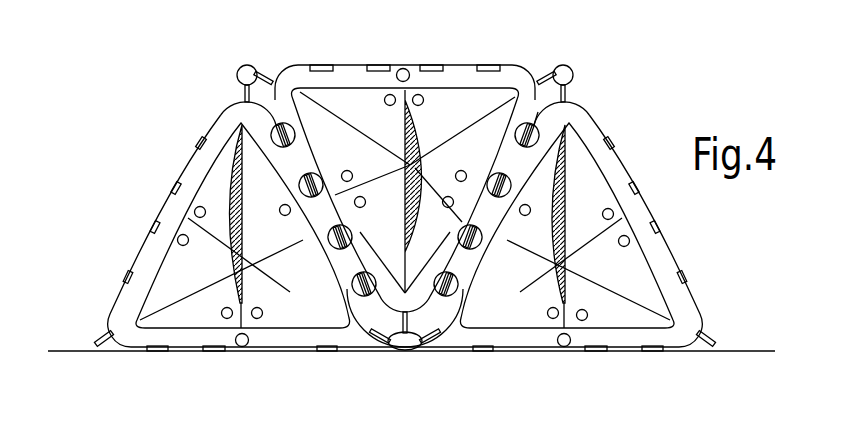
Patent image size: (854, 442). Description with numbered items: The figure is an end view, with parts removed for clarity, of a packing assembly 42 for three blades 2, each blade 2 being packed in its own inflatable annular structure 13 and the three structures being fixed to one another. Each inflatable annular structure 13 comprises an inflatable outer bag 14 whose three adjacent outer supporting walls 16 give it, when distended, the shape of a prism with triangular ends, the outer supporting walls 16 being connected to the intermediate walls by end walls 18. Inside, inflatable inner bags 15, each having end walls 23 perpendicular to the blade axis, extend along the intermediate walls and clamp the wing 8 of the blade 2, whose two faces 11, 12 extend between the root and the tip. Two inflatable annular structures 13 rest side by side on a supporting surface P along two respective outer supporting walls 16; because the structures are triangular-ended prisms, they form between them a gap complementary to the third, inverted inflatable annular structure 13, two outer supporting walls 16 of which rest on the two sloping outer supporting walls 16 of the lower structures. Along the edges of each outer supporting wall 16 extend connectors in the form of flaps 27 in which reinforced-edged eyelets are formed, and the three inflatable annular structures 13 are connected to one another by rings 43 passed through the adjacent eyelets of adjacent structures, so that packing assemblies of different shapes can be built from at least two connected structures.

The blade 2 is at (432, 125).
The wing 8 is at (225, 285).
The face 11 is at (215, 200).
The face 12 is at (244, 240).
The inflatable annular structure 13 is at (328, 66).
The inflatable outer bag 14 is at (383, 60).
The inflatable inner bag 15 is at (258, 125).
The outer supporting wall 16 is at (405, 67).
The end wall 18 is at (112, 312).
The end wall 23 is at (320, 64).
The flap 27 is at (266, 75).
The packing assembly 42 is at (635, 108).
The ring 43 is at (245, 65).
The supporting surface P is at (735, 349).